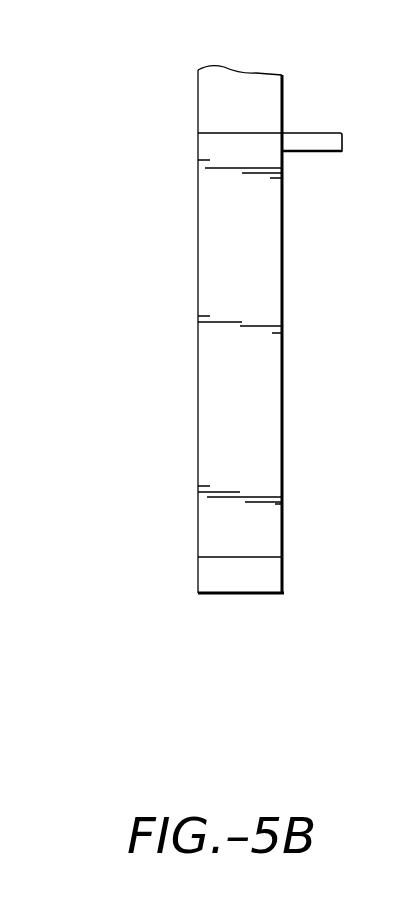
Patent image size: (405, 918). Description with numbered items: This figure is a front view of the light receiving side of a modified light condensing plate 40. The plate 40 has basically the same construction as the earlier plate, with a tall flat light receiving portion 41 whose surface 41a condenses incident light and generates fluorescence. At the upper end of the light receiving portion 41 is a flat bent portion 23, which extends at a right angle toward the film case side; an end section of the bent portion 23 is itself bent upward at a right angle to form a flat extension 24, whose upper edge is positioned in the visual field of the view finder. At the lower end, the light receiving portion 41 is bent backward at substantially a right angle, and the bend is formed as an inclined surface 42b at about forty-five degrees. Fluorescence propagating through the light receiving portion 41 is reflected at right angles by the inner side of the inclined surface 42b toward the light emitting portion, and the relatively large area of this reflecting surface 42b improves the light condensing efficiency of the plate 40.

The light condensing plate 40 is at (226, 329).
The light receiving portion 41 is at (198, 258).
The surface of the light receiving portion 41a is at (260, 295).
The inclined surface 42b is at (213, 576).
The bent portion 23 is at (258, 150).
The extension 24 is at (259, 95).